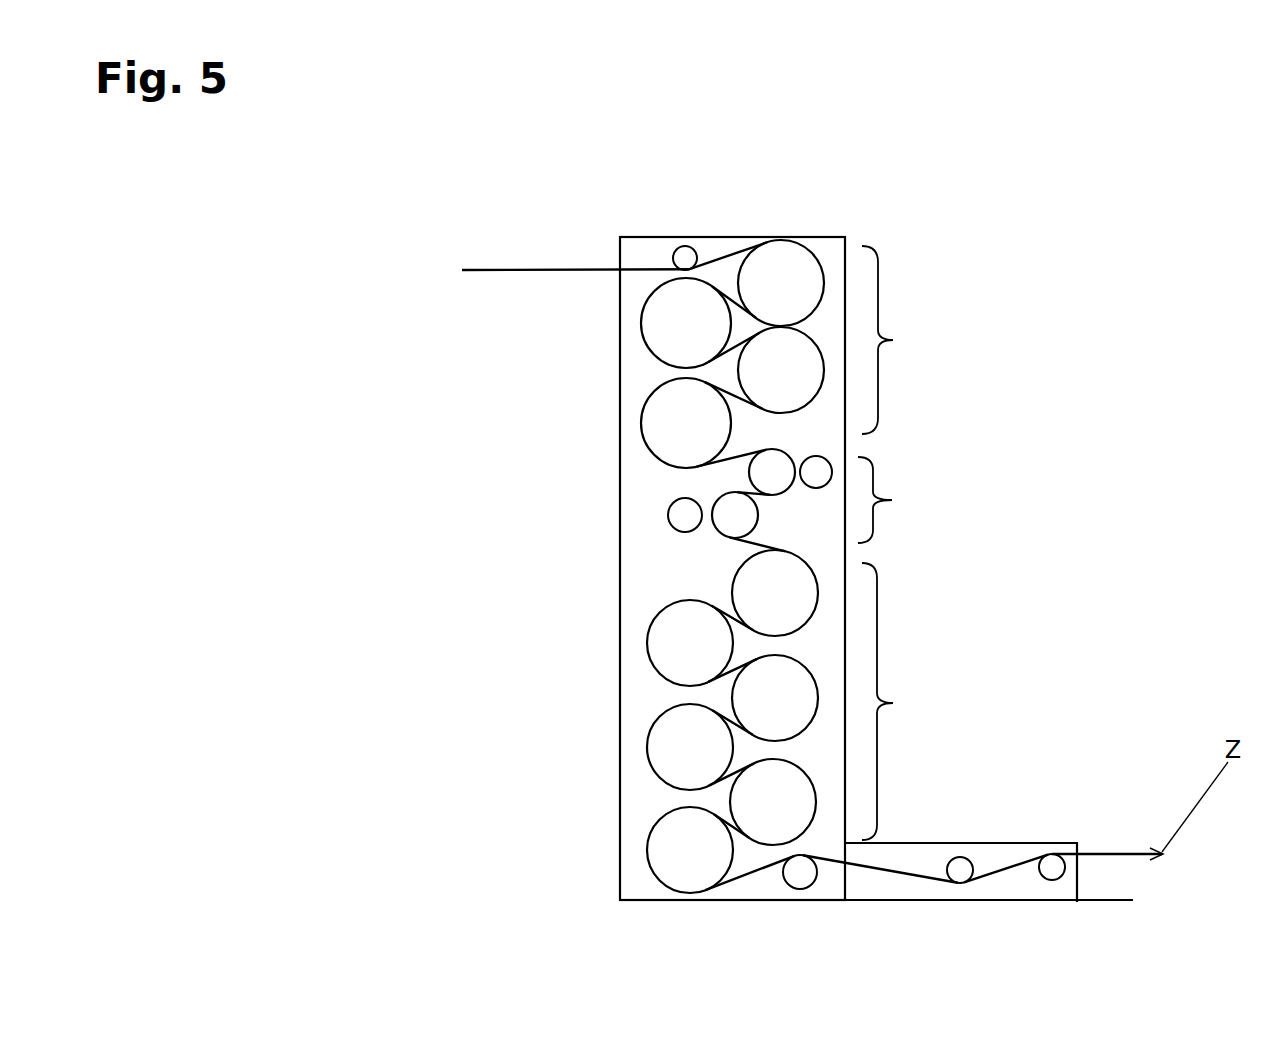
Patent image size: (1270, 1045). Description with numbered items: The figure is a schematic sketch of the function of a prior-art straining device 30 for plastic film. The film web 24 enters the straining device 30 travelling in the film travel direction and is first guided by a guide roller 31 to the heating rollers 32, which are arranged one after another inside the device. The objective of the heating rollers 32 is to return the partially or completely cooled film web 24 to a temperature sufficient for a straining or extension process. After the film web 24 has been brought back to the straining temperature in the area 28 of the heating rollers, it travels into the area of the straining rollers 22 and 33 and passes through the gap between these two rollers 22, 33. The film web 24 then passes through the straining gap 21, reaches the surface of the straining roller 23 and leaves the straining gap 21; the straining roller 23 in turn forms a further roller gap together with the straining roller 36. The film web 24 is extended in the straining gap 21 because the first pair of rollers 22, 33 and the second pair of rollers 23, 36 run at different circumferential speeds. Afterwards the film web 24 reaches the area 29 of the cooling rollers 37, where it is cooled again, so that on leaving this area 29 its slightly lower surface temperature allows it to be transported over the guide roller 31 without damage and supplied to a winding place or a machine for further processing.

The straining gap 21 is at (733, 483).
The straining roller 22 is at (757, 487).
The straining roller 23 is at (720, 530).
The film web 24 is at (542, 268).
The area of the heating rollers 28 is at (898, 340).
The area of the cooling rollers 29 is at (898, 701).
The straining device 30 is at (902, 272).
The guide roller 31 is at (693, 250).
The heating roller 32 is at (764, 298).
The straining roller 33 is at (833, 464).
The straining roller 36 is at (670, 522).
The cooling roller 37 is at (758, 608).